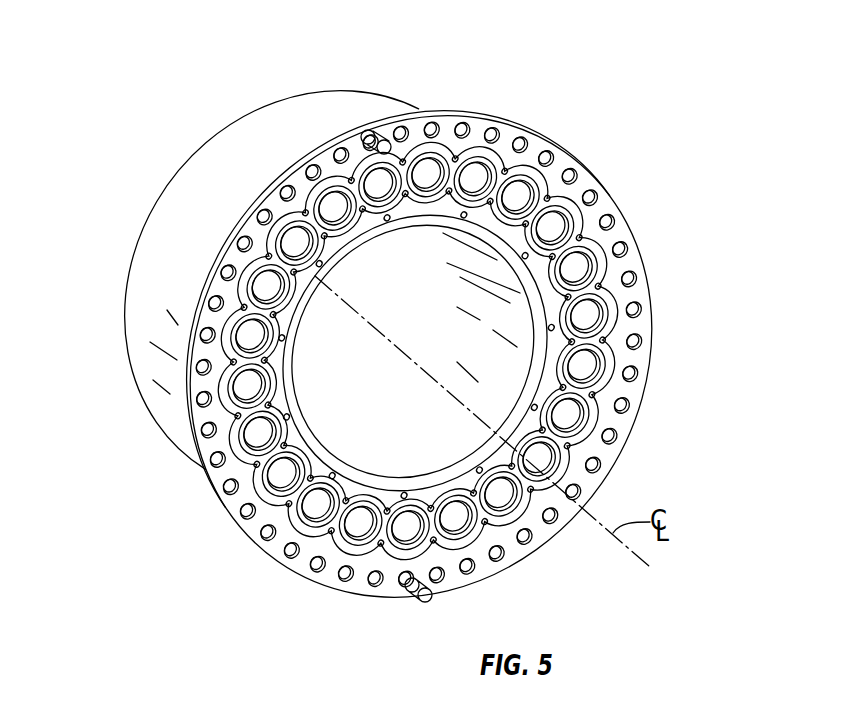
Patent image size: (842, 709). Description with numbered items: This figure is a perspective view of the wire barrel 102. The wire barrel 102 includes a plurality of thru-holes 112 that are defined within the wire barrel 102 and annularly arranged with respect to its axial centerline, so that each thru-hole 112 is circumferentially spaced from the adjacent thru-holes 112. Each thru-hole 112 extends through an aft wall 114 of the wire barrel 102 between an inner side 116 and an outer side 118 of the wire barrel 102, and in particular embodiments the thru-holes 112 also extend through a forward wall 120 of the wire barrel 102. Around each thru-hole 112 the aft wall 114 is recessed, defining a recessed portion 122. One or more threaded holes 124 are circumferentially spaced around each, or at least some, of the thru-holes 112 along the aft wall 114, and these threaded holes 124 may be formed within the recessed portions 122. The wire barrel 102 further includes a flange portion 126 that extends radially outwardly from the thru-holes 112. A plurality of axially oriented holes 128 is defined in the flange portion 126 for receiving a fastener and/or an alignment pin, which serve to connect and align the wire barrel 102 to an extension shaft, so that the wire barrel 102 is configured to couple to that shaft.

The wire barrel 102 is at (401, 352).
The thru-holes 112 is at (252, 437).
The aft wall 114 is at (220, 482).
The inner side 116 is at (350, 430).
The outer side 118 is at (322, 107).
The forward wall 120 is at (147, 218).
The recessed portion 122 is at (303, 532).
The threaded holes 124 is at (270, 398).
The flange portion 126 is at (540, 147).
The axially oriented holes 128 is at (262, 207).